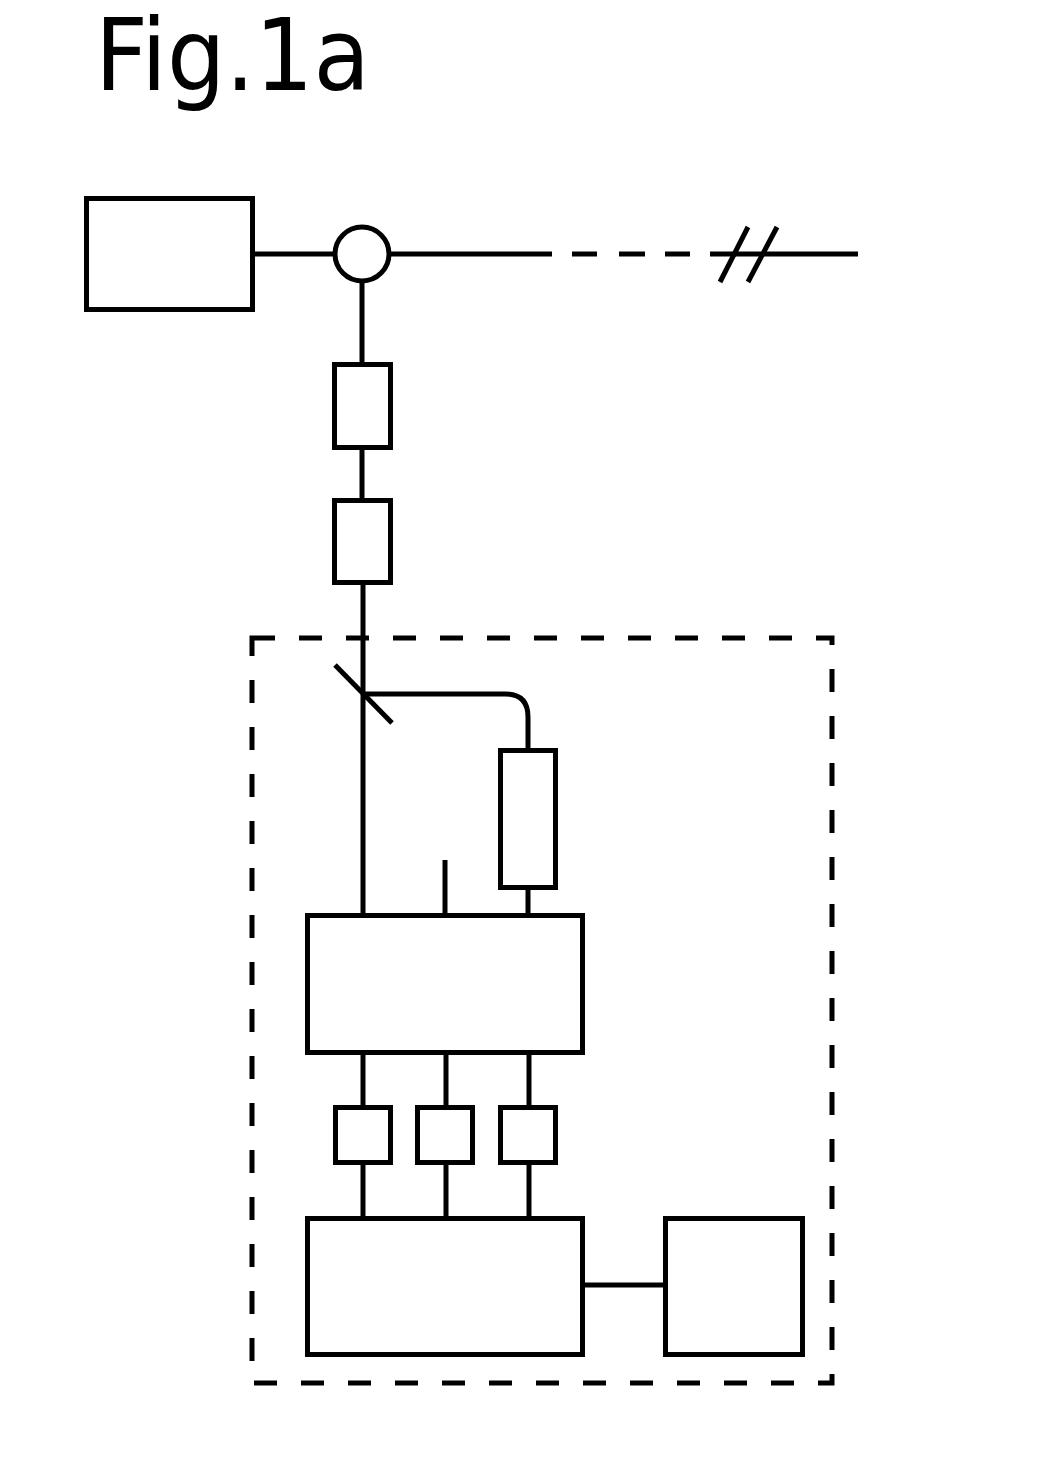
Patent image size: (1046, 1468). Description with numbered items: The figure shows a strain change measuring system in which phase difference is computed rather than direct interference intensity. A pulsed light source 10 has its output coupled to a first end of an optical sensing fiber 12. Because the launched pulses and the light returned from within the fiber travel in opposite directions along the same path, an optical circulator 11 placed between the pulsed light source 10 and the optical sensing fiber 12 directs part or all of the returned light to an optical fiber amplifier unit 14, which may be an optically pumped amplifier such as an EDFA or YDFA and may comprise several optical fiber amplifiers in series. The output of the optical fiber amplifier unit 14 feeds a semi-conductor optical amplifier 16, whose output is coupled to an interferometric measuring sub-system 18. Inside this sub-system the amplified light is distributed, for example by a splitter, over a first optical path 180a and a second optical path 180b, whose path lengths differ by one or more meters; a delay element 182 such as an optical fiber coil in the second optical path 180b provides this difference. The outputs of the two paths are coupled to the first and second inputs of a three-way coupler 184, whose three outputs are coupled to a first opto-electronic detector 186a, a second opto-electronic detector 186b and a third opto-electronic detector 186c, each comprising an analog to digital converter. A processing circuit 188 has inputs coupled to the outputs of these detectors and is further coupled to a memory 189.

The pulsed light source 10 is at (115, 314).
The optical circulator 11 is at (361, 227).
The optical sensing fiber 12 is at (640, 250).
The optical fiber amplifier unit 14 is at (333, 395).
The semi-conductor optical amplifier 16 is at (333, 532).
The interferometric measuring sub-system 18 is at (715, 637).
The first optical path 180a is at (362, 750).
The second optical path 180b is at (445, 692).
The delay element 182 is at (558, 805).
The three-way coupler 184 is at (585, 968).
The first opto-electronic detector 186a is at (333, 1133).
The second opto-electronic detector 186b is at (457, 1165).
The third opto-electronic detector 186c is at (558, 1130).
The processing circuit 188 is at (305, 1278).
The memory 189 is at (780, 1216).